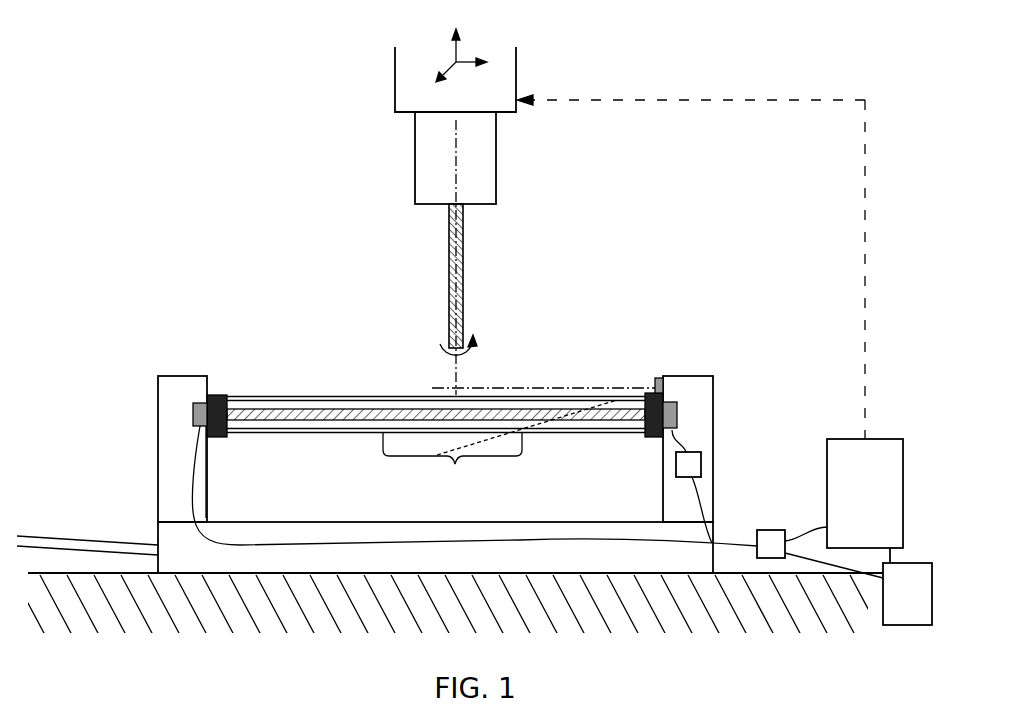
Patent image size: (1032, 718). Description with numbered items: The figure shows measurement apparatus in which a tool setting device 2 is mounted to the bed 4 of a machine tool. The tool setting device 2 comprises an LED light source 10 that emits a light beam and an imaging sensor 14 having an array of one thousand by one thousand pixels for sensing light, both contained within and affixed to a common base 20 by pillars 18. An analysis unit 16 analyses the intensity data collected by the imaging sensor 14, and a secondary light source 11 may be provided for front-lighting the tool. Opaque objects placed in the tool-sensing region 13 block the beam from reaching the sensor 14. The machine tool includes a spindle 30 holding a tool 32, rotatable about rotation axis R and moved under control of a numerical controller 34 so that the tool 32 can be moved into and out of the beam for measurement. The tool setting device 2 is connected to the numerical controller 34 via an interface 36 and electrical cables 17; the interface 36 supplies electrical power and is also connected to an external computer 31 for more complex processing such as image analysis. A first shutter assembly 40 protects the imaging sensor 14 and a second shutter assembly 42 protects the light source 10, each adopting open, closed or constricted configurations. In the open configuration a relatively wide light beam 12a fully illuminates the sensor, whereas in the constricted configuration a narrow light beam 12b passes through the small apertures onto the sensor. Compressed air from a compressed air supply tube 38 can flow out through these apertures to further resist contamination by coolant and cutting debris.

The tool setting device 2 is at (748, 325).
The bed 4 is at (448, 604).
The LED light source 10 is at (200, 403).
The secondary light source 11 is at (657, 392).
The wide light beam 12a is at (340, 397).
The narrow light beam 12b is at (272, 409).
The tool-sensing region 13 is at (500, 451).
The imaging sensor 14 is at (672, 402).
The analysis unit 16 is at (703, 464).
The electrical cables 17 is at (735, 541).
The pillars 18 is at (168, 463).
The common base 20 is at (435, 547).
The spindle 30 is at (517, 165).
The external computer 31 is at (907, 586).
The tool 32 is at (463, 290).
The numerical controller 34 is at (710, 321).
The interface 36 is at (773, 530).
The compressed air supply tube 38 is at (50, 538).
The first shutter assembly 40 is at (653, 438).
The second shutter assembly 42 is at (218, 395).